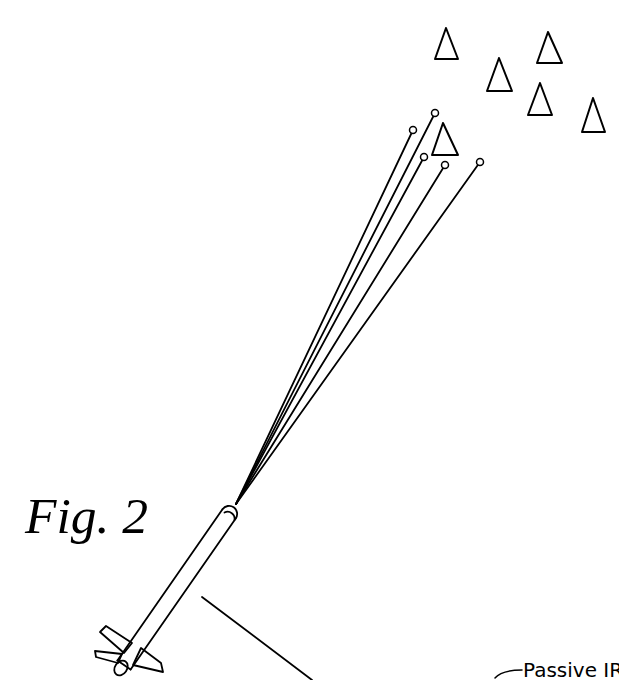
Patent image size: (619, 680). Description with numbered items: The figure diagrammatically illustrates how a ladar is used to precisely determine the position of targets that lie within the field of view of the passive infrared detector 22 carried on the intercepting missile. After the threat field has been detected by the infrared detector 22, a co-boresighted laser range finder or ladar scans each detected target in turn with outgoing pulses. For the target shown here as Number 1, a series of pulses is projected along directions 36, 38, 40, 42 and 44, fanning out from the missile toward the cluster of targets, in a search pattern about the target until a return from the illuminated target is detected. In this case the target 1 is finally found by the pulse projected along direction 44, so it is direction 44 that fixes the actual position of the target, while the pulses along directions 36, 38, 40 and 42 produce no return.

The target 1 is at (442, 142).
The infrared detector 22 is at (152, 620).
The direction 36 is at (381, 197).
The direction 38 is at (406, 170).
The direction 40 is at (388, 223).
The direction 42 is at (455, 197).
The direction 44 is at (382, 268).